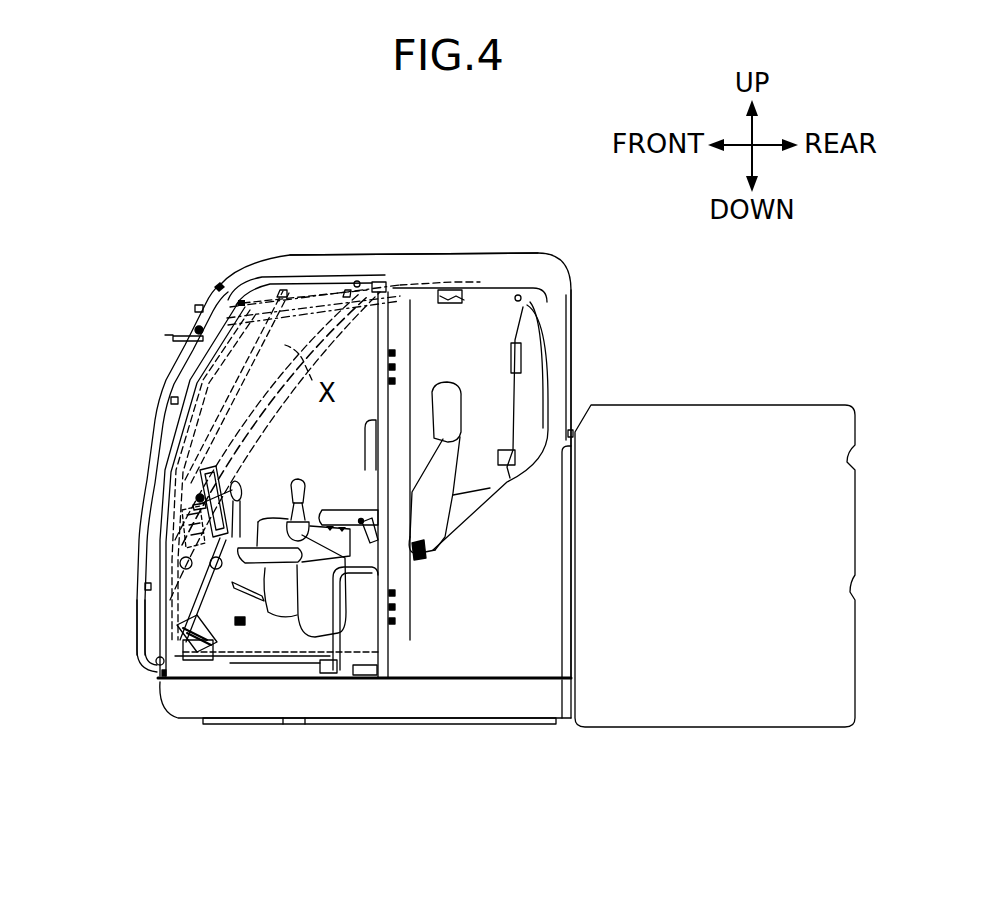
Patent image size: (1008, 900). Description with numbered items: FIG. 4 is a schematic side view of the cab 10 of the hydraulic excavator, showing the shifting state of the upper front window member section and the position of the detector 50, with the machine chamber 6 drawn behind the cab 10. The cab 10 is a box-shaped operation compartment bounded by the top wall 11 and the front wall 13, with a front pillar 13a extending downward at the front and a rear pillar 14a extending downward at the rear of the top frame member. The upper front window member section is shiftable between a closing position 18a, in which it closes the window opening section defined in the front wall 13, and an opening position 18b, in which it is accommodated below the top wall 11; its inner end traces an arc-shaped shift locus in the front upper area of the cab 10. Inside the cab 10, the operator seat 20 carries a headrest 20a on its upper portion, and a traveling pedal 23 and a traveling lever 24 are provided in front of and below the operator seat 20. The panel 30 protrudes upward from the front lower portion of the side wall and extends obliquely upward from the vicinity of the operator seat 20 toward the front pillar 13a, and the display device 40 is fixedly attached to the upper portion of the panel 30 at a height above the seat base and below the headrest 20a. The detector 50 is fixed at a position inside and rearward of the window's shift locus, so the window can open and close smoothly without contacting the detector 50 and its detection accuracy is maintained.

The cab 10 is at (220, 229).
The top wall 11 is at (343, 253).
The front wall 13 is at (150, 455).
The front pillar 13a is at (153, 622).
The rear pillar 14a is at (565, 298).
The closing position 18a is at (205, 363).
The opening position 18b is at (431, 290).
The operator seat 20 is at (423, 530).
The headrest 20a is at (460, 413).
The traveling pedal 23 is at (193, 647).
The traveling lever 24 is at (190, 596).
The panel 30 is at (238, 640).
The display device 40 is at (240, 466).
The detector 50 is at (200, 500).
The machine chamber 6 is at (740, 405).